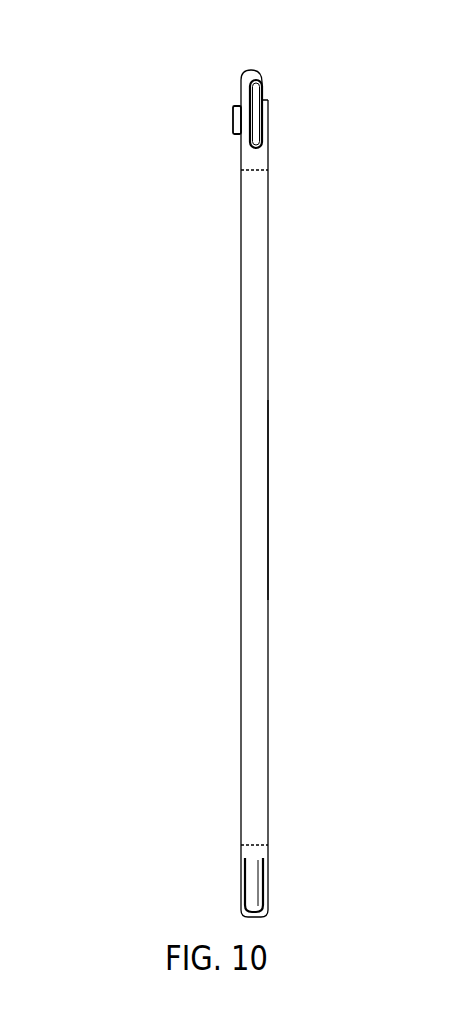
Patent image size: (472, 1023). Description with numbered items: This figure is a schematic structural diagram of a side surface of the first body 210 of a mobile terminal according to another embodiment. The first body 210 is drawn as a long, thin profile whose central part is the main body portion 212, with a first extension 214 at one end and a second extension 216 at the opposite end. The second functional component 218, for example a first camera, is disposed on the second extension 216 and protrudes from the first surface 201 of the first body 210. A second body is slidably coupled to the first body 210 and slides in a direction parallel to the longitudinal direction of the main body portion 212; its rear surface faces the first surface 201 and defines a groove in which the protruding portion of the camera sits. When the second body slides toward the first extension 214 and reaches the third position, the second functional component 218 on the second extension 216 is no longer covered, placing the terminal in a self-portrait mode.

The first body 210 is at (297, 62).
The second extension 216 is at (262, 158).
The second functional component 218 is at (233, 124).
The first surface 201 is at (241, 380).
The main body portion 212 is at (255, 498).
The first extension 214 is at (263, 860).